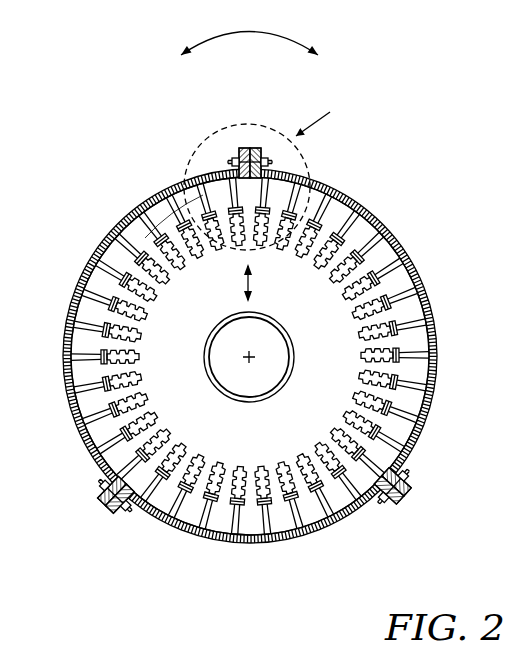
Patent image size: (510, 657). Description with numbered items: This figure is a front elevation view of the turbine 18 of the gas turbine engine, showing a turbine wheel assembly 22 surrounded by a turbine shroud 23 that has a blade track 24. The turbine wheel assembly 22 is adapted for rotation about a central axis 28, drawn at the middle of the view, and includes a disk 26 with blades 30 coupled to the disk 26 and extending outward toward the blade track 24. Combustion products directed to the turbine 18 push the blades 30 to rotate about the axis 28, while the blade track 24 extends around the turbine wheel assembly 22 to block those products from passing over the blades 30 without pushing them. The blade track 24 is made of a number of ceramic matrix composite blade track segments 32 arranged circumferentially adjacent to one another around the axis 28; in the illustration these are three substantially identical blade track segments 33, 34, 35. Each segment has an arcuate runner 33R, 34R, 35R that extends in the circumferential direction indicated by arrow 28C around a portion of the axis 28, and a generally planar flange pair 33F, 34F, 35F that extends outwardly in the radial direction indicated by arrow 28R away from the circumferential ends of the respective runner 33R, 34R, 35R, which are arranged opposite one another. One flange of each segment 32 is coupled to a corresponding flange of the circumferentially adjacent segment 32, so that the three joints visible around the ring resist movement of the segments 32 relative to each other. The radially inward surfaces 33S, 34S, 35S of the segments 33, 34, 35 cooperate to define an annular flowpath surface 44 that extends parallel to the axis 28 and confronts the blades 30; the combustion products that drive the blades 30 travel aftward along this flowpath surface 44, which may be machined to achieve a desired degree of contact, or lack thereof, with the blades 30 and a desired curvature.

The turbine 18 is at (418, 98).
The turbine wheel assembly 22 is at (431, 390).
The turbine shroud 23 is at (445, 157).
The blade track 24 is at (391, 236).
The disk 26 is at (204, 357).
The central axis 28 is at (251, 358).
The circumferential direction arrow 28C is at (248, 35).
The radial direction arrow 28R is at (252, 296).
The blades 30 is at (388, 294).
The blade track segments 32 is at (372, 158).
The blade track segment 33 is at (350, 197).
The flange pair 33F is at (256, 143).
The arcuate runner 33R is at (412, 257).
The radially inward surface 33S is at (399, 231).
The blade track segment 34 is at (358, 510).
The flange pair 34F is at (122, 519).
The arcuate runner 34R is at (203, 537).
The radially inward surface 34S is at (265, 525).
The blade track segment 35 is at (72, 293).
The flange pair 35F is at (238, 143).
The arcuate runner 35R is at (72, 412).
The radially inward surface 35S is at (123, 240).
The annular flowpath surface 44 is at (172, 190).